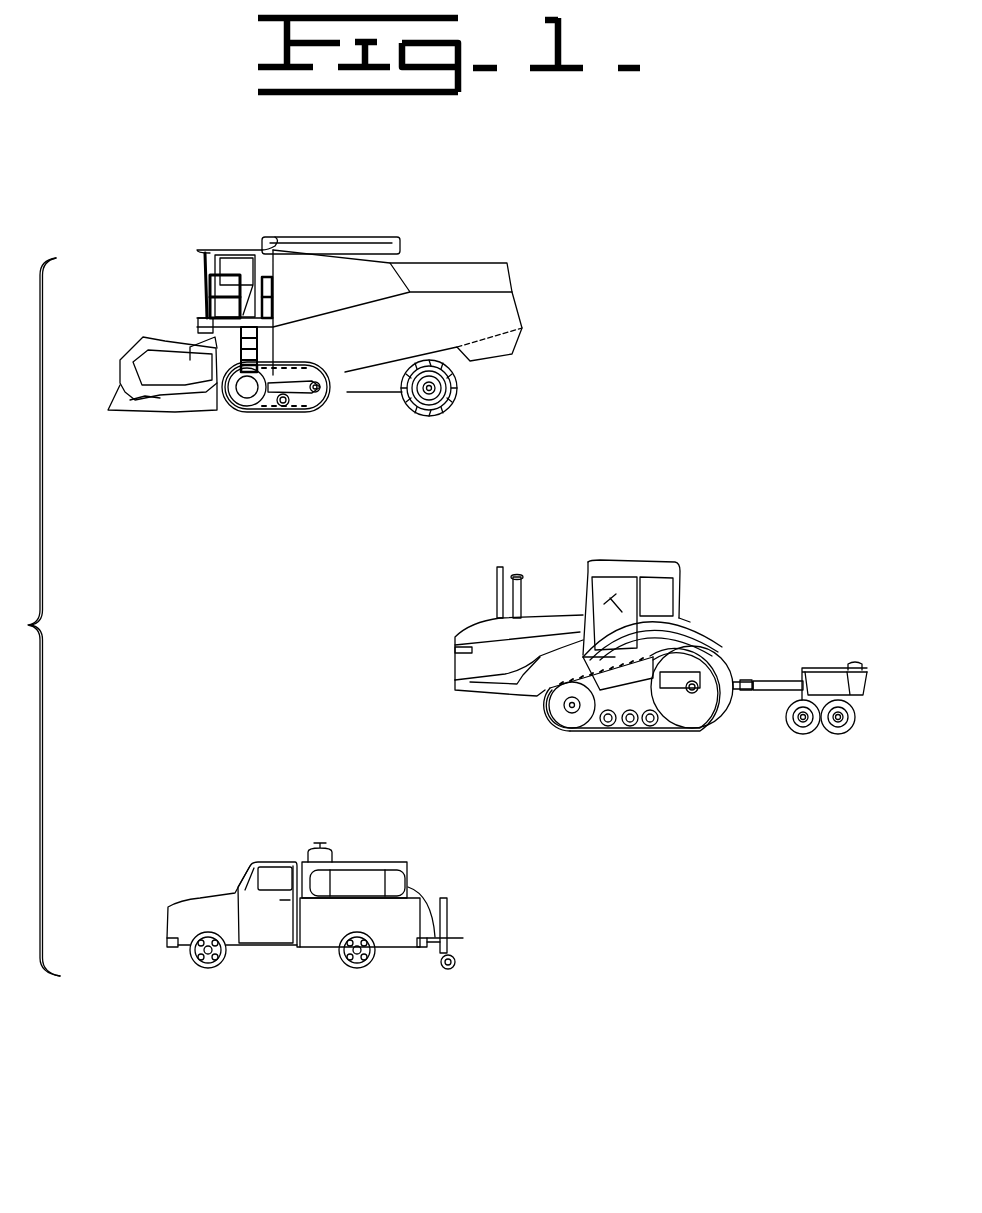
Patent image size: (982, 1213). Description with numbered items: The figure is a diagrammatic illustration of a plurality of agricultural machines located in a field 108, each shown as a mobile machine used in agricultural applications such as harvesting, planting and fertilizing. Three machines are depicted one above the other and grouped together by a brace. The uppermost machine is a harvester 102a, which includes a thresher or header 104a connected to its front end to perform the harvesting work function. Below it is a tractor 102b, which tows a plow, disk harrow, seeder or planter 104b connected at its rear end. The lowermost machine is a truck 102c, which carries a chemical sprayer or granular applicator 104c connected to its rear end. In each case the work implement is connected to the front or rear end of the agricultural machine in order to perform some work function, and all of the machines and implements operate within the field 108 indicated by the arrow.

The harvester 102a is at (437, 275).
The thresher or header 104a is at (180, 397).
The tractor 102b is at (640, 558).
The plow, disk harrow, seeder or planter 104b is at (837, 663).
The truck 102c is at (220, 892).
The chemical sprayer or granular applicator 104c is at (455, 932).
The field 108 is at (628, 992).